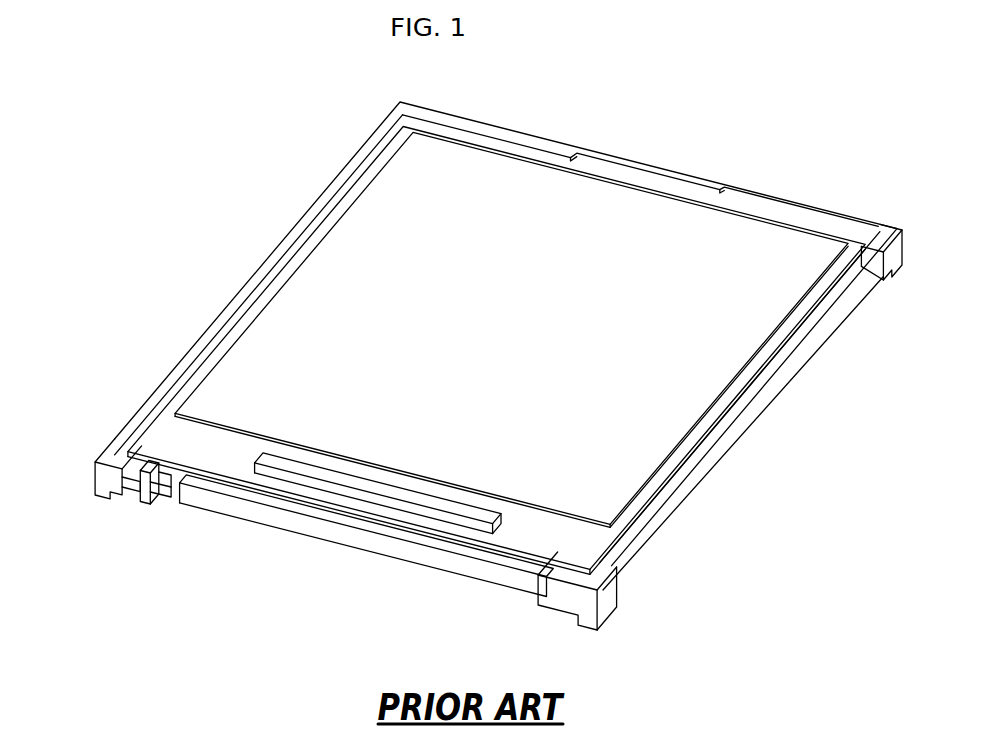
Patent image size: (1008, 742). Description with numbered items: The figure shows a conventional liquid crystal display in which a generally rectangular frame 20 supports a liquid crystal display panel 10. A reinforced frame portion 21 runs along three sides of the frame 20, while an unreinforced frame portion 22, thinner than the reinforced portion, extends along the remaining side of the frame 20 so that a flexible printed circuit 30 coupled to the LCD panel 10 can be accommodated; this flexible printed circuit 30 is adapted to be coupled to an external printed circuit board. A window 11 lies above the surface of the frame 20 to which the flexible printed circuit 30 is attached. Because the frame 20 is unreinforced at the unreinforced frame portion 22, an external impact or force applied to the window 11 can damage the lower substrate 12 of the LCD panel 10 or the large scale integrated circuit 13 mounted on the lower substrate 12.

The liquid crystal display panel 10 is at (496, 351).
The window 11 is at (473, 488).
The lower substrate 12 is at (532, 518).
The large scale integrated circuit 13 is at (415, 493).
The frame 20 is at (468, 366).
The reinforced frame portion 21 is at (110, 462).
The unreinforced frame portion 22 is at (146, 504).
The flexible printed circuit 30 is at (313, 533).